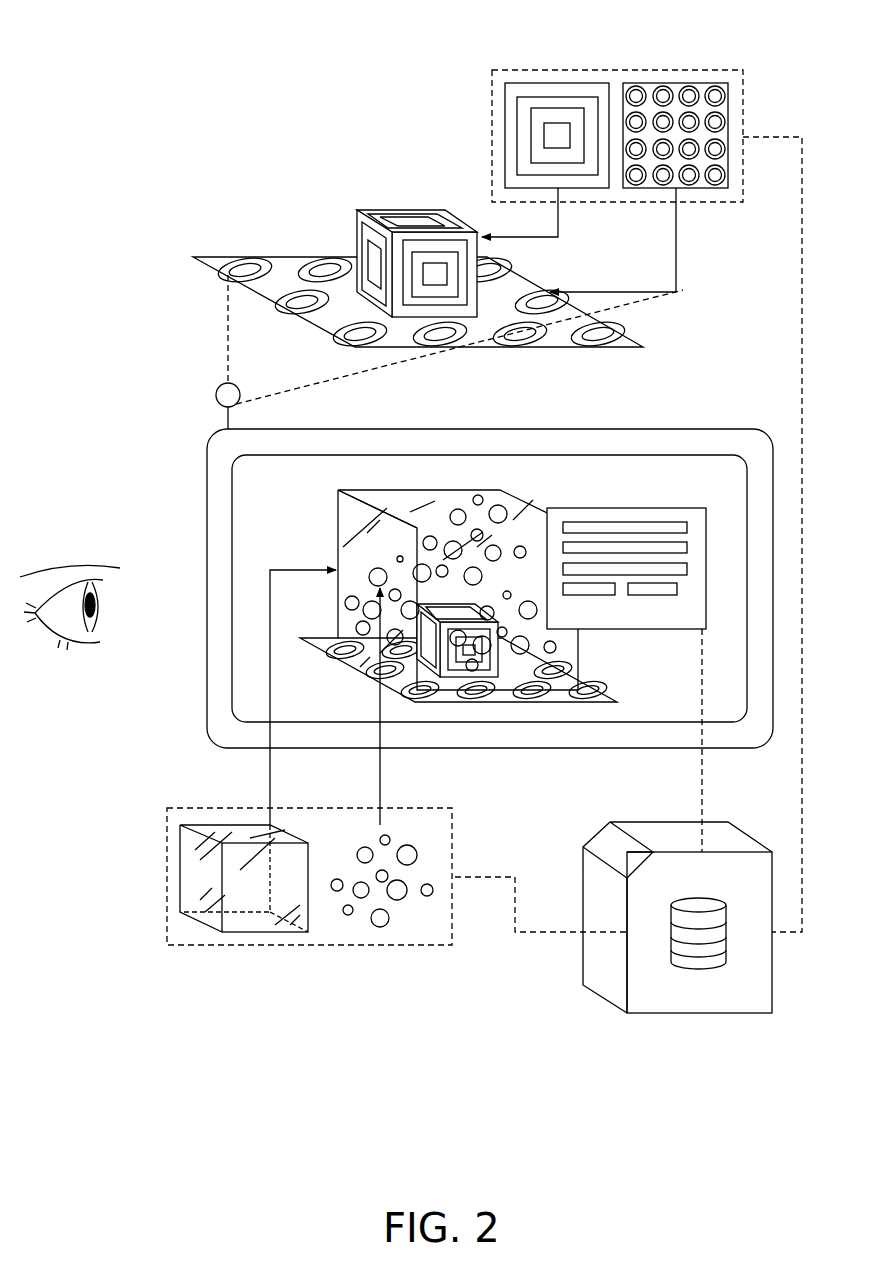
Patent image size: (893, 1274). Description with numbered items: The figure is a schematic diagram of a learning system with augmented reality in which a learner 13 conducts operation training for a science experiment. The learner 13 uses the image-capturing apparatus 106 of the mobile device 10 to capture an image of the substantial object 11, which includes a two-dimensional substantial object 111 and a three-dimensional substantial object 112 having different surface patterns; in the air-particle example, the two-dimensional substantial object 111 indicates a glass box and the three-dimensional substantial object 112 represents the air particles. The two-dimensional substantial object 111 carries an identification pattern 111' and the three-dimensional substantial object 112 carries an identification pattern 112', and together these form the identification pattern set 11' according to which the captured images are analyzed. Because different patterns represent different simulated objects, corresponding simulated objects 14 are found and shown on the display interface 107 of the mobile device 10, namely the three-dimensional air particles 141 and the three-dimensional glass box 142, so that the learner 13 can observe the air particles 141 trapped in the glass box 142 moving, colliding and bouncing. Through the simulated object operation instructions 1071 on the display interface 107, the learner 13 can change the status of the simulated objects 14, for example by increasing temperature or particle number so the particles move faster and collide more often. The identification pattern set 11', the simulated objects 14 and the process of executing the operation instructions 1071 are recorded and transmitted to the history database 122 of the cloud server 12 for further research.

The mobile device 10 is at (525, 430).
The image-capturing apparatus 106 is at (216, 388).
The display interface 107 is at (620, 455).
The simulated object operation instructions 1071 is at (600, 520).
The substantial object 11 is at (415, 236).
The 2D substantial object 111 is at (418, 271).
The 3D substantial object 112 is at (391, 229).
The identification pattern set 11' is at (627, 473).
The identification pattern of 2D substantial object 111' is at (694, 109).
The identification pattern of 3D substantial object 112' is at (593, 109).
The cloud server 12 is at (607, 995).
The history database 122 is at (690, 962).
The learner 13 is at (92, 562).
The simulated objects 14 is at (410, 945).
The 3D air particles 141 is at (378, 930).
The 3D glass box 142 is at (237, 932).